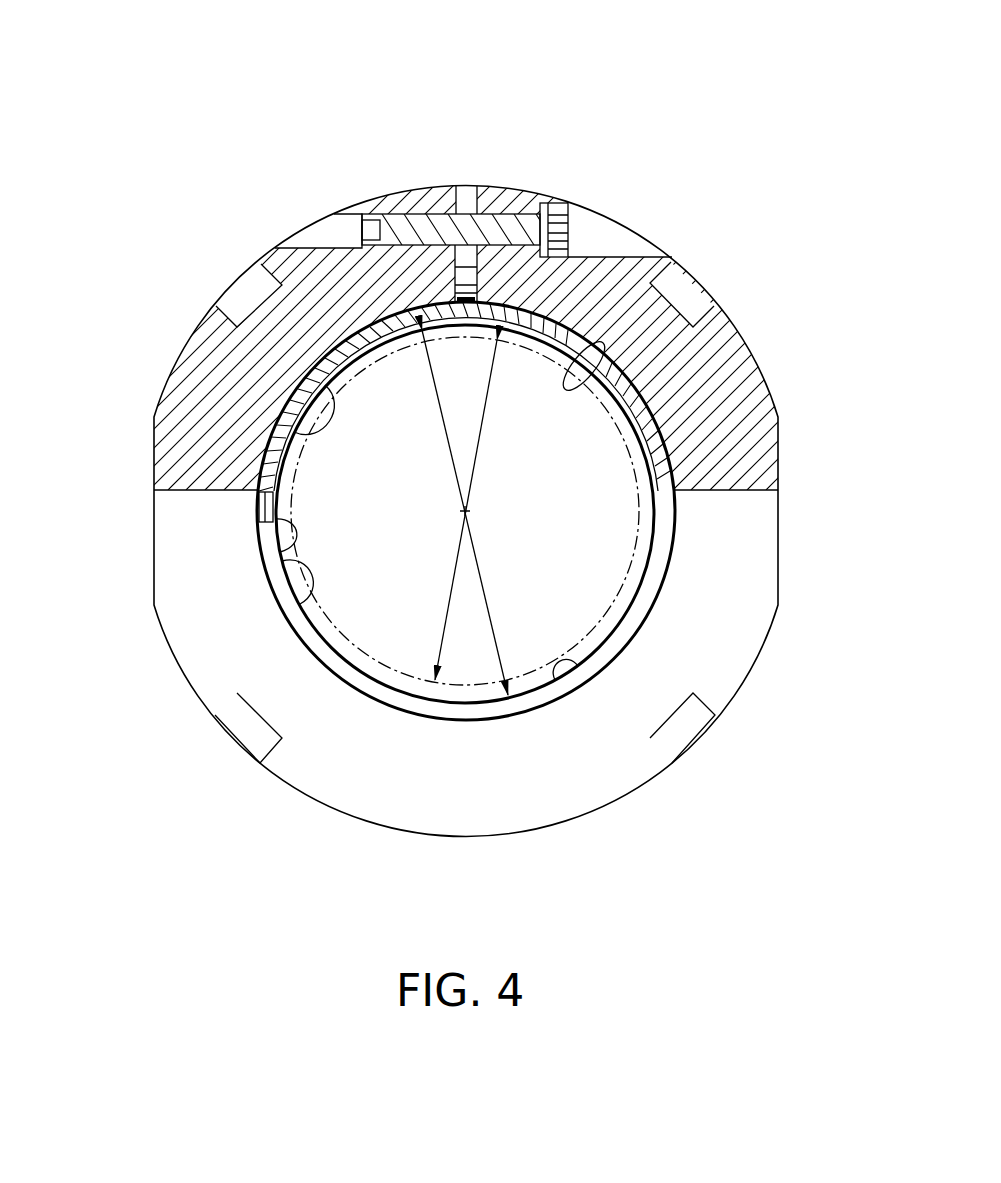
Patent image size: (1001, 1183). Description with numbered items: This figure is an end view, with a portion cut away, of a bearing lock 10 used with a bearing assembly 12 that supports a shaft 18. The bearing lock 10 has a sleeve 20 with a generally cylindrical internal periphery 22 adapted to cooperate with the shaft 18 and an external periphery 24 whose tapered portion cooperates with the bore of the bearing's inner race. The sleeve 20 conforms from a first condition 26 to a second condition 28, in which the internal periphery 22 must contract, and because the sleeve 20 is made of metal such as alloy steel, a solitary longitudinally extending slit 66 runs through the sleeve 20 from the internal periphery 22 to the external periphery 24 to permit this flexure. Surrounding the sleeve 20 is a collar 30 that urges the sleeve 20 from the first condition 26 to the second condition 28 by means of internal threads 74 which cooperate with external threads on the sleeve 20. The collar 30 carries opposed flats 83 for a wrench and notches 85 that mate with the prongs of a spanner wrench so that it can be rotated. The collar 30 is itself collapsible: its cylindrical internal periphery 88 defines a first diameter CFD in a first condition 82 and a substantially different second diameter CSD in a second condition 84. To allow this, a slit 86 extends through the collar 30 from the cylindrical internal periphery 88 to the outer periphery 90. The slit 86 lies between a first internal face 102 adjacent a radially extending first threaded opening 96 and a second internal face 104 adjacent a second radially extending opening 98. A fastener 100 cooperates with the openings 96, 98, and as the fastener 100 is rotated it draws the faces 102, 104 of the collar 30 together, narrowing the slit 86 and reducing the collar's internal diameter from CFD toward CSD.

The bearing lock 10 is at (268, 152).
The bearing assembly 12 is at (135, 92).
The shaft 18 is at (600, 348).
The sleeve 20 is at (682, 549).
The generally cylindrical internal periphery 22 is at (323, 400).
The external periphery 24 is at (347, 333).
The first condition 26 is at (300, 603).
The second condition 28 is at (297, 543).
The collar 30 is at (767, 387).
The longitudinal slit 66 is at (255, 509).
The internal threads 74 is at (572, 680).
The first condition 82 is at (562, 353).
The opposed flats 83 is at (778, 497).
The second condition 84 is at (587, 383).
The notches or holes 85 is at (700, 748).
The slit 86 is at (470, 180).
The cylindrical internal periphery 88 is at (633, 607).
The outer periphery 90 is at (757, 657).
The first threaded opening 96 is at (286, 228).
The second radially extending opening 98 is at (648, 233).
The fastener 100 is at (566, 210).
The first internal face 102 is at (462, 205).
The second internal face 104 is at (471, 205).
The first diameter CFD is at (456, 566).
The second diameter CSD is at (470, 552).